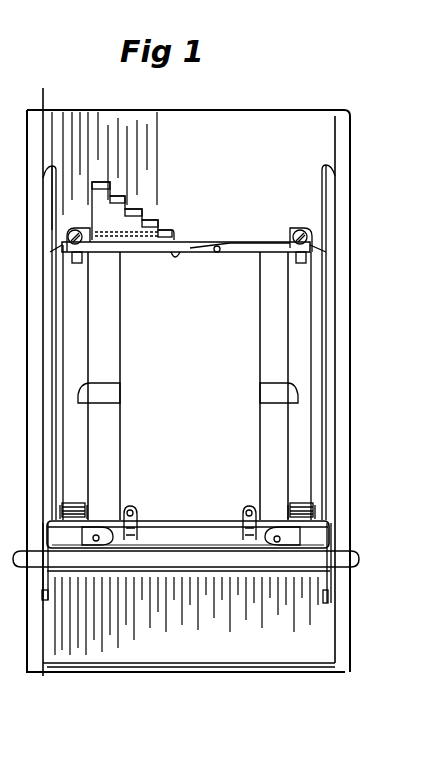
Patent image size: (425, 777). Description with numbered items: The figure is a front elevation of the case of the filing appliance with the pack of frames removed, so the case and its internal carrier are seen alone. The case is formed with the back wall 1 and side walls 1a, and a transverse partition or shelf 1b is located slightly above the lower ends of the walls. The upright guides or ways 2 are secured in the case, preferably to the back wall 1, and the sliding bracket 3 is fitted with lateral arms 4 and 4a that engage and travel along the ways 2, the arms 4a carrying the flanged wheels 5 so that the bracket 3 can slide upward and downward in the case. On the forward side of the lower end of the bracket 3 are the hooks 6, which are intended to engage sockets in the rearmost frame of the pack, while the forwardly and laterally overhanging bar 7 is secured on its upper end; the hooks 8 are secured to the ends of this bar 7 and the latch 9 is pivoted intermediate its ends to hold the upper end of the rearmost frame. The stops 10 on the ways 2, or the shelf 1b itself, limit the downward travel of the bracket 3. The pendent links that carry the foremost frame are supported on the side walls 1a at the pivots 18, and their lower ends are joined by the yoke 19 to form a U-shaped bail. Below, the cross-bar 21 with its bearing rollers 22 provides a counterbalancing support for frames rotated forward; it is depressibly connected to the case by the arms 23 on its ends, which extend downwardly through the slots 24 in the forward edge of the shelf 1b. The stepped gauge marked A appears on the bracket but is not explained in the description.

The back wall 1 is at (188, 391).
The side walls 1a is at (364, 182).
The transverse partition or shelf 1b is at (358, 560).
The upright guides or ways 2 is at (188, 386).
The sliding bracket 3 is at (104, 383).
The lateral arms 4 is at (188, 393).
The lateral arms 4a is at (97, 536).
The flanged wheels 5 is at (288, 547).
The hooks 6 is at (137, 519).
The overhanging bar 7 is at (239, 253).
The hooks 8 is at (74, 228).
The latch 9 is at (222, 242).
The stops 10 is at (77, 263).
The pivot support of the pendent links 18 is at (57, 181).
The yoke 19 is at (196, 548).
The cross-bar 21 is at (178, 521).
The bearing rollers 22 is at (80, 502).
The arms 23 is at (42, 529).
The slots 24 is at (48, 576).
The step gauge A is at (133, 211).